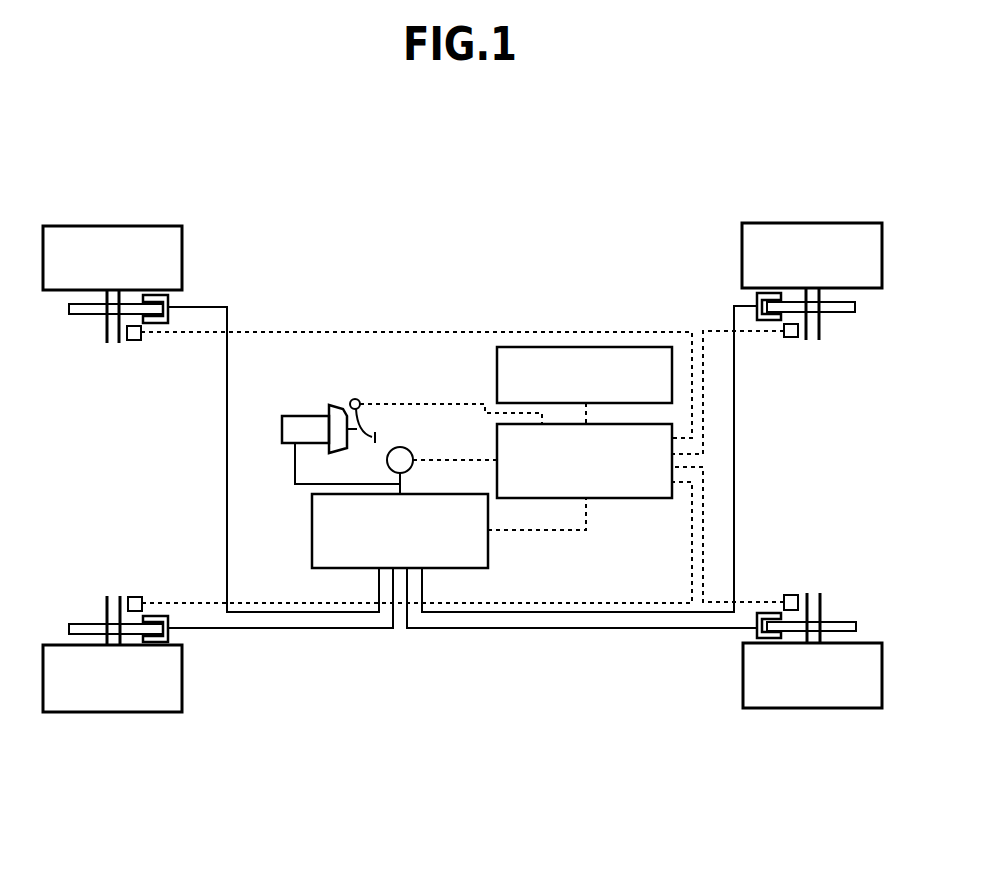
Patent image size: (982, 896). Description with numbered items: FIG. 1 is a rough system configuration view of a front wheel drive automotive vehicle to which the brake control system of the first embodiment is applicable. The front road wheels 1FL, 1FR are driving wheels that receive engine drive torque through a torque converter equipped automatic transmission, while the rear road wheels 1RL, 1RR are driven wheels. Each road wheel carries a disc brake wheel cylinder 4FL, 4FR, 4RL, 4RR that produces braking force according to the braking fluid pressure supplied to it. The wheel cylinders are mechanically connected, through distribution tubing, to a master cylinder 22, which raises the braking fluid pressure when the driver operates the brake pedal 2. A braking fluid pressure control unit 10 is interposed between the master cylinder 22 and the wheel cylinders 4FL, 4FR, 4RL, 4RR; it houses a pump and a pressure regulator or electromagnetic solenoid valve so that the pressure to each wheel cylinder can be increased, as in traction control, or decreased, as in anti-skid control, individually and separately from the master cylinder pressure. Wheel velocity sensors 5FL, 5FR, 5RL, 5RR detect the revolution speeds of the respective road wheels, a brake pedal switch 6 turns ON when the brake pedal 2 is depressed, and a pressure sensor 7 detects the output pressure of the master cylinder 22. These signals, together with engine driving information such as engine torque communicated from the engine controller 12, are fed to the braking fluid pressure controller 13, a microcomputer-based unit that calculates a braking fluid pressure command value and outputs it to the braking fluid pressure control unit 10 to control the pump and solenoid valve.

The front right road wheel 1FR is at (135, 226).
The rear right road wheel 1RR is at (790, 223).
The front left road wheel 1FL is at (135, 712).
The rear left road wheel 1RL is at (790, 708).
The wheel cylinder 4FR is at (170, 300).
The wheel cylinder 4RR is at (757, 298).
The wheel cylinder 4FL is at (170, 637).
The wheel cylinder 4RL is at (757, 634).
The wheel velocity sensor 5FR is at (135, 343).
The wheel velocity sensor 5RR is at (790, 340).
The wheel velocity sensor 5FL is at (135, 595).
The wheel velocity sensor 5RL is at (790, 594).
The brake pedal 2 is at (376, 437).
The brake pedal switch 6 is at (355, 399).
The pressure sensor 7 is at (387, 461).
The master cylinder 22 is at (295, 416).
The braking fluid pressure control unit 10 is at (312, 530).
The engine controller 12 is at (497, 371).
The braking fluid pressure controller 13 is at (607, 499).